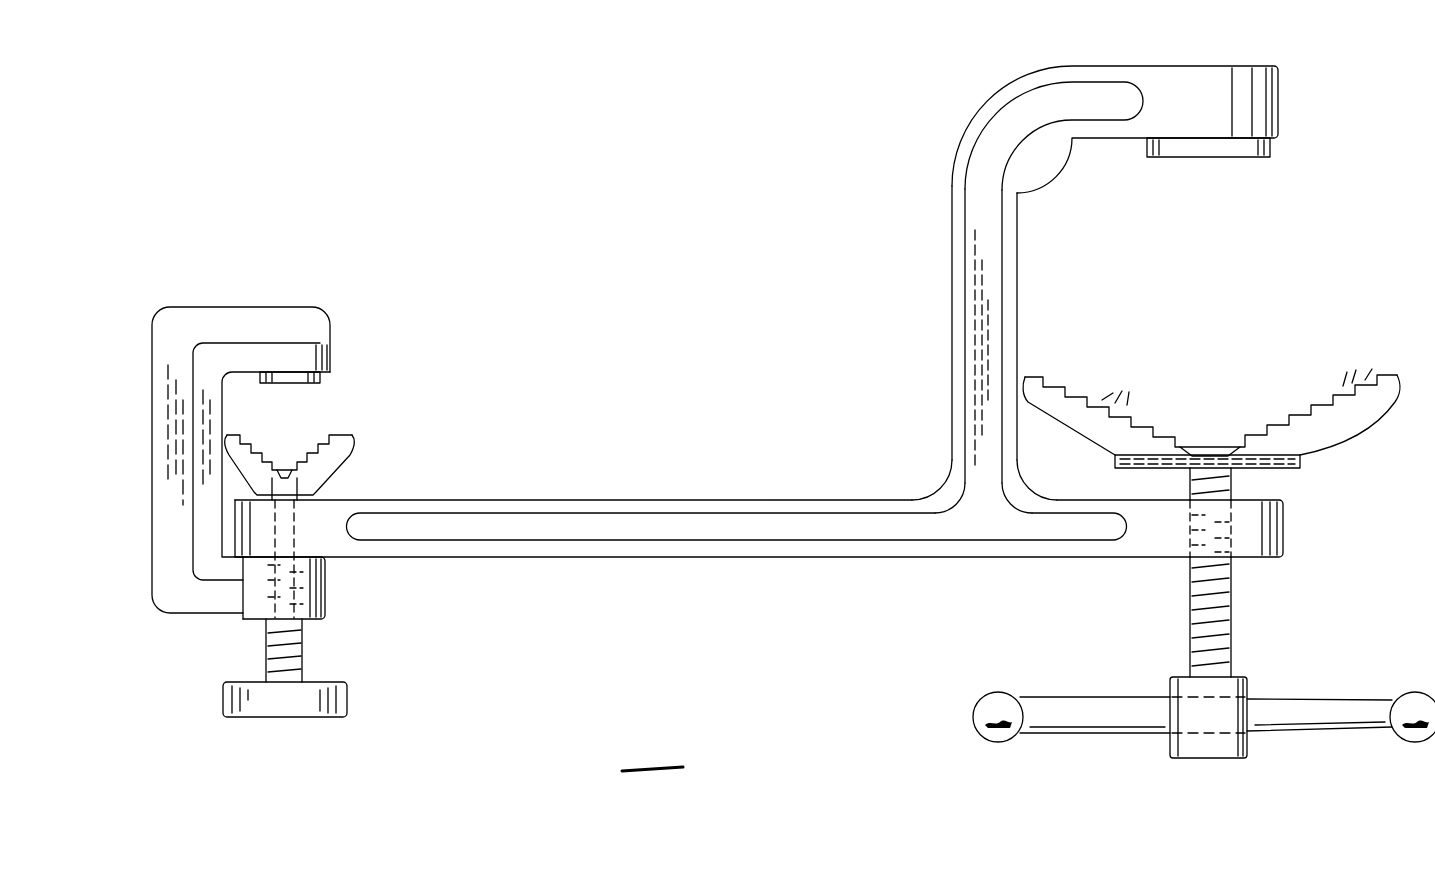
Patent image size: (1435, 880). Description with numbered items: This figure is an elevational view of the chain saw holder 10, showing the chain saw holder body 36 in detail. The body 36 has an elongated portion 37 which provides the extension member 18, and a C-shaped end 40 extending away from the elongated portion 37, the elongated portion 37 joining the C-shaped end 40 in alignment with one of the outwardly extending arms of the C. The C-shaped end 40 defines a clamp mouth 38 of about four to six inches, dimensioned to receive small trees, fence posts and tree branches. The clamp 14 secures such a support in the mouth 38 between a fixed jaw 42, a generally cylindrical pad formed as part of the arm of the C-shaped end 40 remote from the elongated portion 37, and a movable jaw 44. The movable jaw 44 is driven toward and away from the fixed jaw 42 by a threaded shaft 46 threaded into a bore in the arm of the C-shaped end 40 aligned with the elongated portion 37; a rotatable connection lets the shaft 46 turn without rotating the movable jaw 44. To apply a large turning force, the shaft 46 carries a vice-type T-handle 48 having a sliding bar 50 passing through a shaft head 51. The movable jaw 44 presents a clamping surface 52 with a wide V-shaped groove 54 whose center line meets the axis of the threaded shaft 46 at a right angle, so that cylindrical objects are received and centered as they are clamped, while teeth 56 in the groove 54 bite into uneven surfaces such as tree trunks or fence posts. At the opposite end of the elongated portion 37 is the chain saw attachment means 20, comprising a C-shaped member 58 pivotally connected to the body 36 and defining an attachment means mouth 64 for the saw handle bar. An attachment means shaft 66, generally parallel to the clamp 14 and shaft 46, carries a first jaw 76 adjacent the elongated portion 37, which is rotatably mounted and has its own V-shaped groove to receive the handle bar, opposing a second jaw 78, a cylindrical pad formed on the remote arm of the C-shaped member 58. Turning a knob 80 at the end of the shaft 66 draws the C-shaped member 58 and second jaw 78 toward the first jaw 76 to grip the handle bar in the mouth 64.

The chain saw holder 10 is at (753, 238).
The clamp 14 is at (1346, 196).
The extension member 18 is at (748, 560).
The chain saw attachment means 20 is at (267, 296).
The chain saw holder body 36 is at (930, 465).
The elongated portion 37 is at (557, 518).
The clamp mouth 38 is at (1196, 245).
The C-shaped end 40 is at (978, 288).
The fixed jaw 42 is at (1270, 150).
The movable jaw 44 is at (1222, 407).
The threaded shaft 46 is at (1215, 628).
The T-handle 48 is at (1270, 743).
The sliding bar 50 is at (1078, 722).
The shaft head 51 is at (1180, 745).
The clamping surface 52 is at (1299, 393).
The V-shaped groove 54 is at (1216, 425).
The teeth 56 is at (1237, 376).
The C-shaped member 58 is at (170, 462).
The attachment means mouth 64 is at (296, 414).
The attachment means shaft 66 is at (312, 650).
The first jaw 76 is at (316, 478).
The second jaw 78 is at (322, 378).
The knob 80 is at (335, 692).